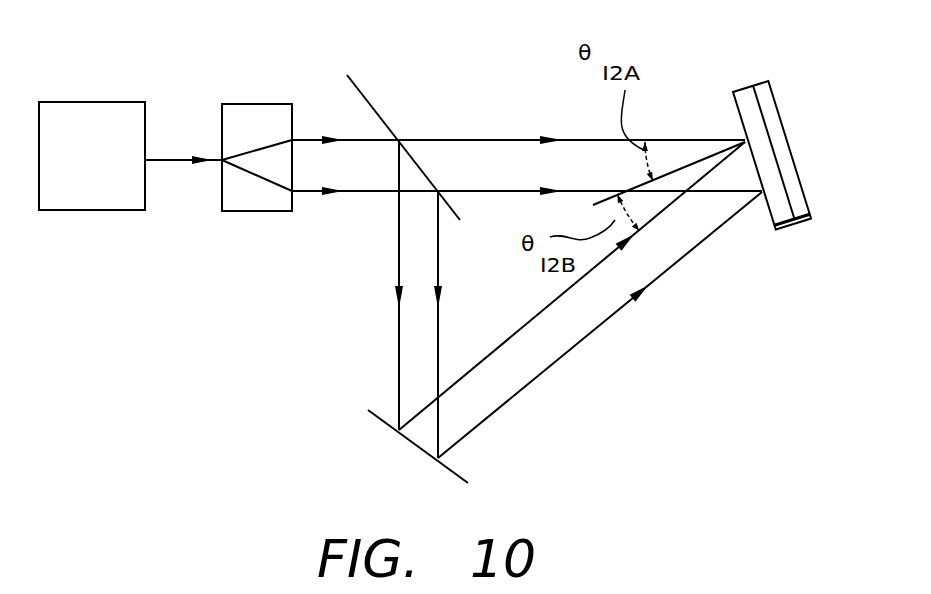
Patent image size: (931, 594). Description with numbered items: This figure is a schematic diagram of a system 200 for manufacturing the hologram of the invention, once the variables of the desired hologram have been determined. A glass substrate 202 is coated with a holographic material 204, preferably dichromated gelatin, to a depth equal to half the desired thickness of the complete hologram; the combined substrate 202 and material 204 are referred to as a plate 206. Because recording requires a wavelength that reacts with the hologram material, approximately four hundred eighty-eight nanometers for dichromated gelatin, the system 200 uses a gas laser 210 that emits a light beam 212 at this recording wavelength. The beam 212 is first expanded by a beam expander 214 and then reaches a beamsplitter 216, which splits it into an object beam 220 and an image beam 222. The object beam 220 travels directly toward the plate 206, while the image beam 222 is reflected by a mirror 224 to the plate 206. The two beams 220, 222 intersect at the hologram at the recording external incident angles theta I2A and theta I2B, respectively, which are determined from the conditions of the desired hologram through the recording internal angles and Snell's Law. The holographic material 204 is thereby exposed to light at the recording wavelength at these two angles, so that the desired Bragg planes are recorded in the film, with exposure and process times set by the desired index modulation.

The system for manufacturing the hologram system 200 is at (216, 370).
The glass substrate 202 is at (762, 82).
The holographic material 204 is at (733, 88).
The plate 206 is at (797, 228).
The gas laser 210 is at (98, 102).
The light beam 212 is at (182, 158).
The beam expander 214 is at (267, 103).
The beamsplitter 216 is at (368, 102).
The object beam 220 is at (480, 138).
The image beam 222 is at (393, 353).
The mirror 224 is at (398, 431).